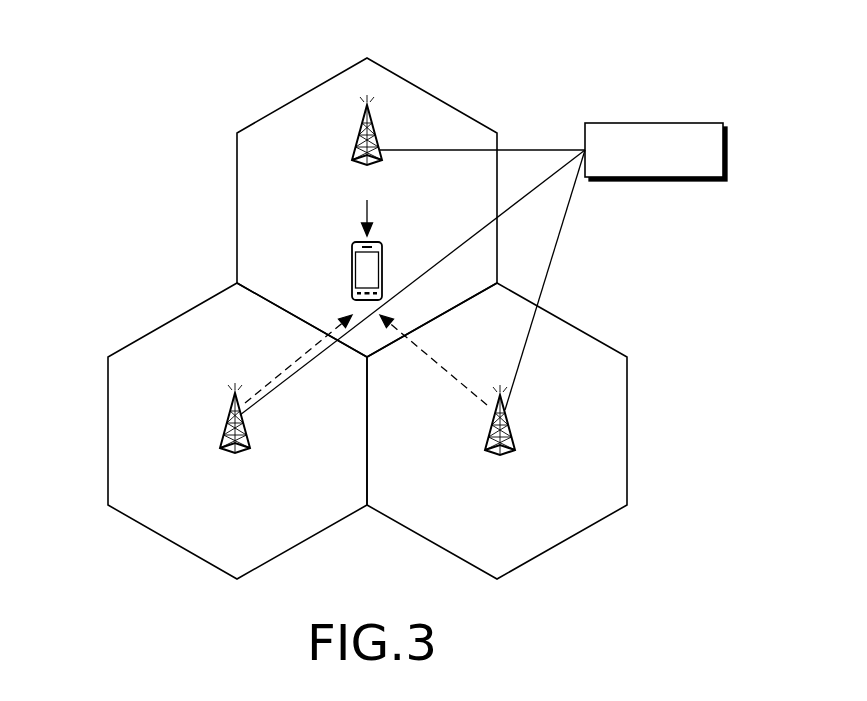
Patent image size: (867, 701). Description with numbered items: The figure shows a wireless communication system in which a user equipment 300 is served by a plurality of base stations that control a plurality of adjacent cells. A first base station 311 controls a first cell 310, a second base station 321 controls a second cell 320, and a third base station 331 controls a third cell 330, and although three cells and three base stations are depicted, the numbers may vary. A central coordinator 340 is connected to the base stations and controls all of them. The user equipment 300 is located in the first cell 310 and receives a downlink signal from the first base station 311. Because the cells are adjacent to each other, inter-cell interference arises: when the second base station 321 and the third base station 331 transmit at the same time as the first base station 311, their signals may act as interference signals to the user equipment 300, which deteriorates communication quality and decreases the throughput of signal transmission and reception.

The user equipment 300 is at (350, 272).
The first cell 310 is at (367, 57).
The first base station 311 is at (376, 136).
The second cell 320 is at (108, 430).
The second base station 321 is at (250, 431).
The third cell 330 is at (627, 428).
The third base station 331 is at (516, 431).
The central coordinator 340 is at (654, 122).